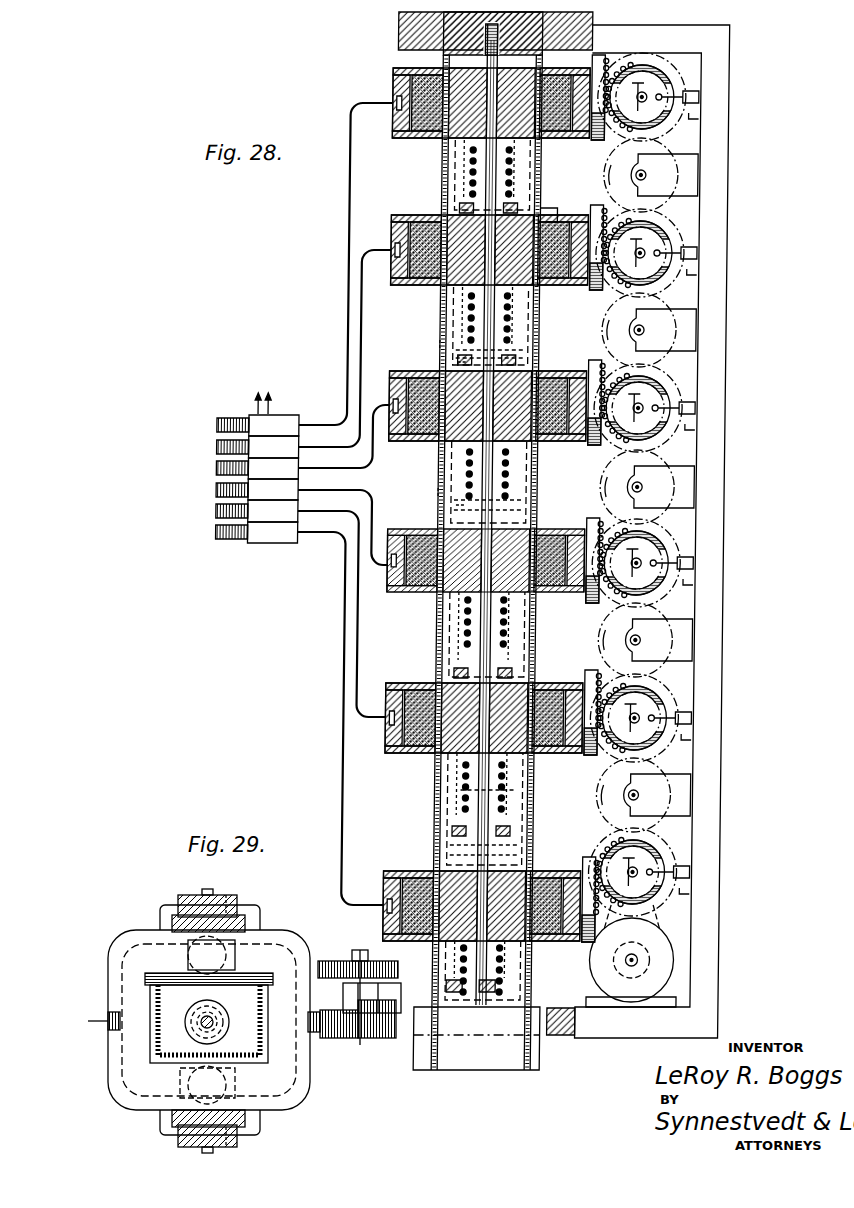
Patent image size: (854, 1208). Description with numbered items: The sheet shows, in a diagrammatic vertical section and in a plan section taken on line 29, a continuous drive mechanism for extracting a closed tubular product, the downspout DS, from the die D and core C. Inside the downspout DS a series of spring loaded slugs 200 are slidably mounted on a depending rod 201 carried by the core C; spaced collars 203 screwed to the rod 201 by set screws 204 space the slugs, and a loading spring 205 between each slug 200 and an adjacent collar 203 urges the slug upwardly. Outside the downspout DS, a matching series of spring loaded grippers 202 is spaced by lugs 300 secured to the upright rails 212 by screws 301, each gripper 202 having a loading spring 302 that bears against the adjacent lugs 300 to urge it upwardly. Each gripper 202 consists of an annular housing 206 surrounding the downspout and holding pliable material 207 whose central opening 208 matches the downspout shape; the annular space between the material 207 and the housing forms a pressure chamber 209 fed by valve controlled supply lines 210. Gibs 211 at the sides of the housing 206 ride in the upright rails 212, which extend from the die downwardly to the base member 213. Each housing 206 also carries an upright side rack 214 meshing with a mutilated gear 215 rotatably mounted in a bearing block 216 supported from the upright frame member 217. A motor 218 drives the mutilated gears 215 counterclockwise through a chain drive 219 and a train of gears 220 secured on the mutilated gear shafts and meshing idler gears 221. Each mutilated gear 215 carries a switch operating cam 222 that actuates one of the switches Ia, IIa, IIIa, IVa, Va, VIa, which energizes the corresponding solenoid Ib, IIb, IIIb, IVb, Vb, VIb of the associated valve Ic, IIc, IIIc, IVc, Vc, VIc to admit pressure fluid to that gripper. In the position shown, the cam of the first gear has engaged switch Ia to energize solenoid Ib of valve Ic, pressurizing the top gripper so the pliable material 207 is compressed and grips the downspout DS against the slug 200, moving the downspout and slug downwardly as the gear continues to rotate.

In FIG. 28, the spring loaded slug 200 is at (467, 78).
In FIG. 29, the spring loaded slug 200 is at (172, 1050).
In FIG. 28, the depending rod 201 is at (482, 306).
In FIG. 29, the depending rod 201 is at (228, 1035).
In FIG. 28, the external spring loaded gripper 202 is at (392, 80).
In FIG. 29, the external spring loaded gripper 202 is at (120, 930).
In FIG. 28, the spaced collar 203 is at (512, 205).
In FIG. 28, the set screw 204 is at (462, 204).
In FIG. 28, the loading spring 205 is at (512, 172).
In FIG. 29, the loading spring 205 is at (230, 1028).
In FIG. 28, the annular housing 206 is at (394, 104).
In FIG. 29, the annular housing 206 is at (110, 952).
In FIG. 28, the pliable material 207 is at (412, 120).
In FIG. 29, the pliable material 207 is at (150, 988).
In FIG. 28, the central opening 208 is at (546, 213).
In FIG. 29, the central opening 208 is at (175, 1046).
In FIG. 28, the pressure chamber 209 is at (402, 125).
In FIG. 29, the pressure chamber 209 is at (133, 935).
In FIG. 28, the valve controlled supply line 210 is at (352, 101).
In FIG. 29, the gib 211 is at (180, 905).
In FIG. 28, the upright rail 212 is at (523, 488).
In FIG. 29, the upright rail 212 is at (197, 895).
In FIG. 28, the base member 213 is at (570, 1036).
In FIG. 28, the upright side rack 214 is at (604, 57).
In FIG. 29, the upright side rack 214 is at (320, 1038).
In FIG. 28, the mutilated gear 215 is at (658, 70).
In FIG. 29, the mutilated gear 215 is at (378, 1038).
In FIG. 28, the bearing block 216 is at (706, 118).
In FIG. 29, the bearing block 216 is at (345, 1000).
In FIG. 28, the upright frame member 217 is at (712, 511).
In FIG. 28, the motor 218 is at (667, 962).
In FIG. 28, the chain drive 219 is at (700, 922).
In FIG. 28, the gear 220 is at (690, 92).
In FIG. 29, the gear 220 is at (350, 962).
In FIG. 28, the idler gear 221 is at (700, 176).
In FIG. 28, the switch operating cam 222 is at (672, 126).
In FIG. 28, the spaced lug 300 is at (522, 362).
In FIG. 29, the spaced lug 300 is at (240, 935).
In FIG. 28, the screw 301 is at (462, 362).
In FIG. 29, the screw 301 is at (212, 889).
In FIG. 28, the loading spring 302 is at (444, 345).
In FIG. 29, the loading spring 302 is at (232, 895).
In FIG. 28, the section line 29— 29 is at (400, 50).
In FIG. 28, the die D is at (399, 19).
In FIG. 28, the core C is at (595, 26).
In FIG. 28, the downspout DS is at (444, 166).
In FIG. 29, the downspout DS is at (258, 975).
In FIG. 28, the switch I Ia is at (702, 97).
In FIG. 28, the switch II IIa is at (702, 253).
In FIG. 28, the switch III IIIa is at (702, 408).
In FIG. 28, the switch IV IVa is at (702, 563).
In FIG. 28, the switch V Va is at (702, 718).
In FIG. 28, the switch VI VIa is at (702, 872).
In FIG. 28, the solenoid I Ib is at (222, 427).
In FIG. 28, the solenoid II IIb is at (222, 449).
In FIG. 28, the solenoid III IIIb is at (222, 470).
In FIG. 28, the solenoid IV IVb is at (222, 492).
In FIG. 28, the solenoid V Vb is at (222, 513).
In FIG. 28, the solenoid VI VIb is at (222, 534).
In FIG. 28, the valve I Ic is at (274, 425).
In FIG. 28, the valve II IIc is at (274, 447).
In FIG. 28, the valve III IIIc is at (273, 468).
In FIG. 28, the valve IV IVc is at (273, 489).
In FIG. 28, the valve V Vc is at (273, 511).
In FIG. 28, the valve VI VIc is at (272, 532).